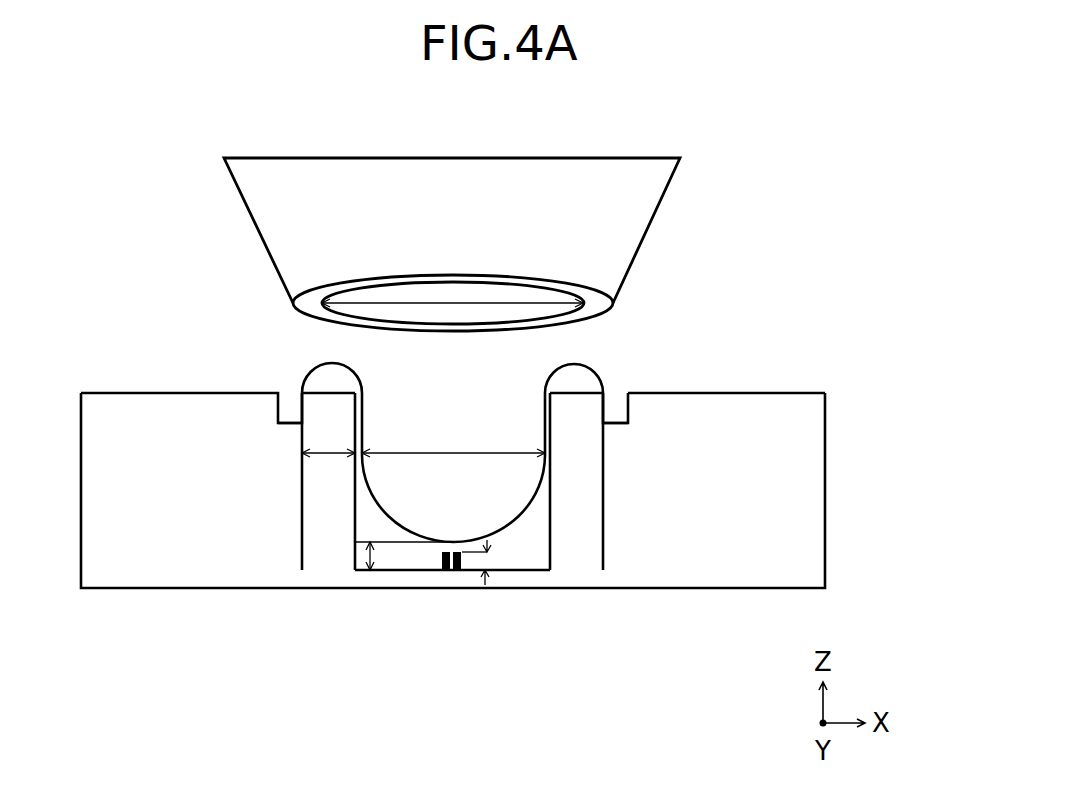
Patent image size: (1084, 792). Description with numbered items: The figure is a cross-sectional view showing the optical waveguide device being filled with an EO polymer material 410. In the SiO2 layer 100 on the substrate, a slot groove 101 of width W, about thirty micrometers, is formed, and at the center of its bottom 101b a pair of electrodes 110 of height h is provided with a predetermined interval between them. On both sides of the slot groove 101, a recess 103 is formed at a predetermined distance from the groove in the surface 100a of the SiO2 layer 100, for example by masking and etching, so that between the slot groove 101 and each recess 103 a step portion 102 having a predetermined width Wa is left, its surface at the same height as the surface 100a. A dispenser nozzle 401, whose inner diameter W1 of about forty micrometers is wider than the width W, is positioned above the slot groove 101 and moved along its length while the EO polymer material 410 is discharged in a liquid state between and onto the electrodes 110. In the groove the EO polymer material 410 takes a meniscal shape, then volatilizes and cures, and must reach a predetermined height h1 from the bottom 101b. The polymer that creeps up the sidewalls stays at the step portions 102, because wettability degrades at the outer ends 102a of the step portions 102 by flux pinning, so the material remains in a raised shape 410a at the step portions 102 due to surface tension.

The dispenser nozzle 401 is at (477, 158).
The SiO2 layer 100 is at (815, 463).
The surface of the SiO2 layer 100a is at (722, 402).
The slot groove 101 is at (448, 406).
The bottom of the slot groove 101b is at (420, 570).
The step portion 102 is at (327, 393).
The outer end of the step portion 102a is at (300, 390).
The recess 103 is at (288, 417).
The electrodes 110 is at (447, 570).
The EO polymer material 410 is at (535, 556).
The raised portion of the EO polymer material 410a is at (347, 380).
The inner diameter of the dispenser nozzle W1 is at (442, 303).
The width of the slot groove W is at (453, 437).
The width of the step portion Wa is at (328, 469).
The height of the electrodes h is at (488, 557).
The height of the EO polymer material h1 is at (372, 556).